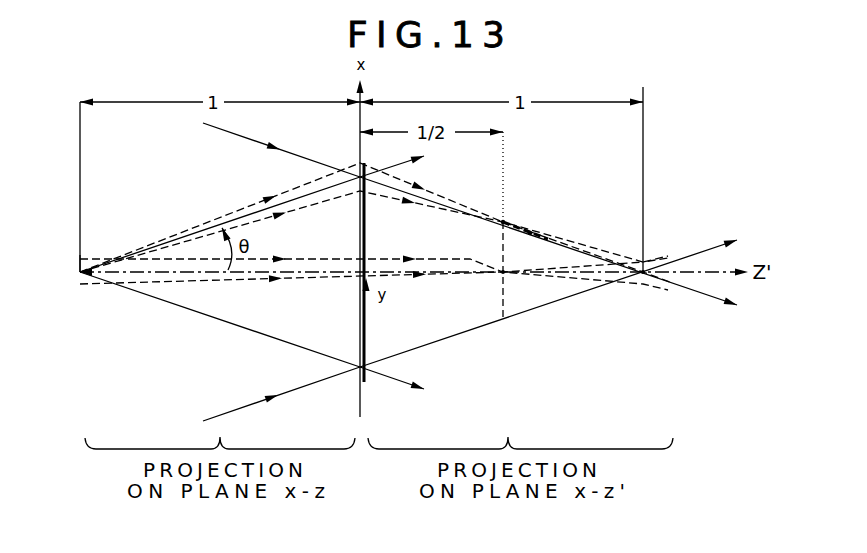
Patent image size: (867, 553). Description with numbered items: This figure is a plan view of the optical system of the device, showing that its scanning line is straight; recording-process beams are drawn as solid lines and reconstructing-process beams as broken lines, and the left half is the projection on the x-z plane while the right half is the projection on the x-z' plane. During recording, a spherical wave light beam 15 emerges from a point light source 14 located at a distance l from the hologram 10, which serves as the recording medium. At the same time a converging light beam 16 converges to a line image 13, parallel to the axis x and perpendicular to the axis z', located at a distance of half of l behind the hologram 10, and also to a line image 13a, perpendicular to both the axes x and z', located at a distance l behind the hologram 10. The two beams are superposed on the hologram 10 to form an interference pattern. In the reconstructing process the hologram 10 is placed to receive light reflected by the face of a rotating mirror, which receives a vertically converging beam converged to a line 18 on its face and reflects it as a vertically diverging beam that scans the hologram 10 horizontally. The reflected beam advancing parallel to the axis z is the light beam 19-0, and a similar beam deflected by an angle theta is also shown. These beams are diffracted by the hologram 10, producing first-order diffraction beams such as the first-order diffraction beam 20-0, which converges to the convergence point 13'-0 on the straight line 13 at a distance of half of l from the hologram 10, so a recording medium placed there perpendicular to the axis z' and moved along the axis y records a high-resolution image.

The hologram 10 is at (366, 233).
The line image 13 is at (520, 287).
The line image 13a is at (648, 278).
The convergence point 13'-0 is at (564, 240).
The point light source 14 is at (78, 276).
The spherical wave light beam 15 is at (160, 240).
The converging light beam 16 is at (237, 146).
The line on the mirror face 18 is at (78, 266).
The light beam 19-0 is at (302, 284).
The first-order diffraction beam 20-0 is at (434, 277).